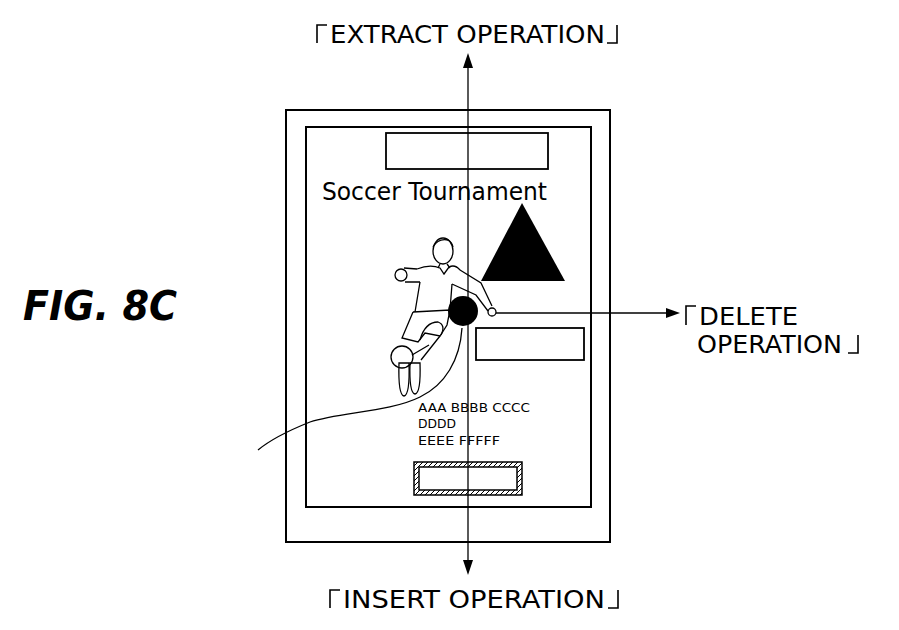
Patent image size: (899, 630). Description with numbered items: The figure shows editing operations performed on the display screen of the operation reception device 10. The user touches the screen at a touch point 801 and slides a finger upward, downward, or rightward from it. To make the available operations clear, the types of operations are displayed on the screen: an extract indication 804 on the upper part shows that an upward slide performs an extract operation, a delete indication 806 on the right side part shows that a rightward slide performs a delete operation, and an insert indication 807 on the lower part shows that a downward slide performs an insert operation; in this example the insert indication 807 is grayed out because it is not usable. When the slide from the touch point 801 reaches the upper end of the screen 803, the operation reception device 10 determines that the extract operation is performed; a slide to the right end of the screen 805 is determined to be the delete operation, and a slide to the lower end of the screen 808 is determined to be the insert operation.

The operation reception device 10 is at (260, 151).
The touch point 801 is at (345, 382).
The upper end of the screen 803 is at (468, 78).
The extract indication 804 is at (548, 152).
The right end of the screen 805 is at (643, 312).
The delete indication 806 is at (553, 358).
The insert indication 807 is at (522, 476).
The lower end of the screen 808 is at (468, 523).